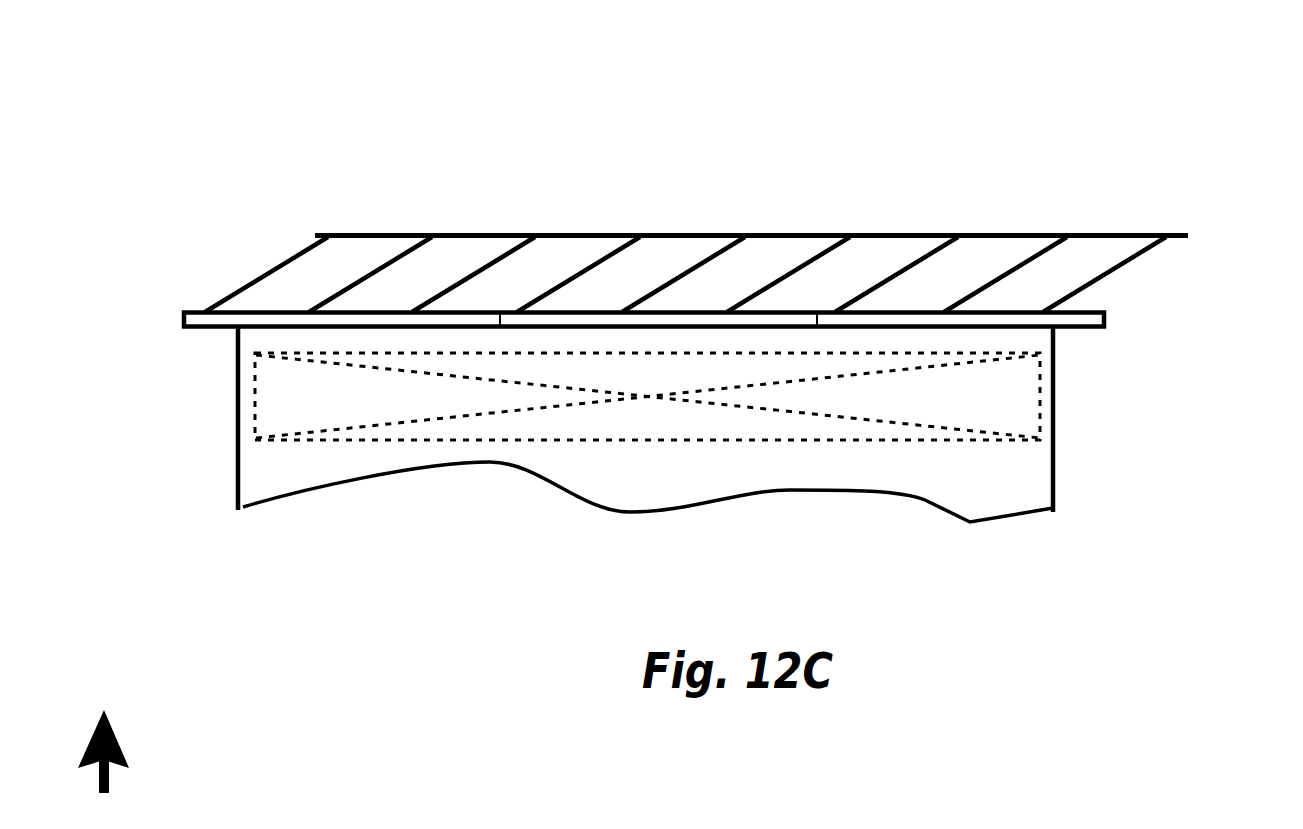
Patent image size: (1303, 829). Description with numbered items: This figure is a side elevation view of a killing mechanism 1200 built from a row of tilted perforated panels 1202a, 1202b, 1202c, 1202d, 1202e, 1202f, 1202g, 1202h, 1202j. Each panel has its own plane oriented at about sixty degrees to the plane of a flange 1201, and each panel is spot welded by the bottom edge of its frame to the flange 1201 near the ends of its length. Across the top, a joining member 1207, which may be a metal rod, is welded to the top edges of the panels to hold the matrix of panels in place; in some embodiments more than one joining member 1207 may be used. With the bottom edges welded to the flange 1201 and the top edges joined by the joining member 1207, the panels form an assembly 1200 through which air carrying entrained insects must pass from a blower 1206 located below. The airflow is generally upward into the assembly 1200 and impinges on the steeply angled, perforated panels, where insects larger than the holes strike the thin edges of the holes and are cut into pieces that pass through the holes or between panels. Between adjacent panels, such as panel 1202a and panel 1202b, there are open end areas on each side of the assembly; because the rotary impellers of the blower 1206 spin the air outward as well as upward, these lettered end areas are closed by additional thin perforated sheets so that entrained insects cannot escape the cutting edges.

The killing mechanism 1200 is at (827, 96).
The flange 1201 is at (180, 321).
The panel 1202a is at (268, 266).
The panel 1202b is at (388, 248).
The panel 1202c is at (497, 248).
The panel 1202d is at (613, 248).
The panel 1202e is at (720, 248).
The panel 1202f is at (827, 248).
The panel 1202g is at (932, 248).
The panel 1202h is at (1042, 248).
The panel 1202j is at (1145, 248).
The blower 1206 is at (238, 402).
The joining member 1207 is at (1163, 230).